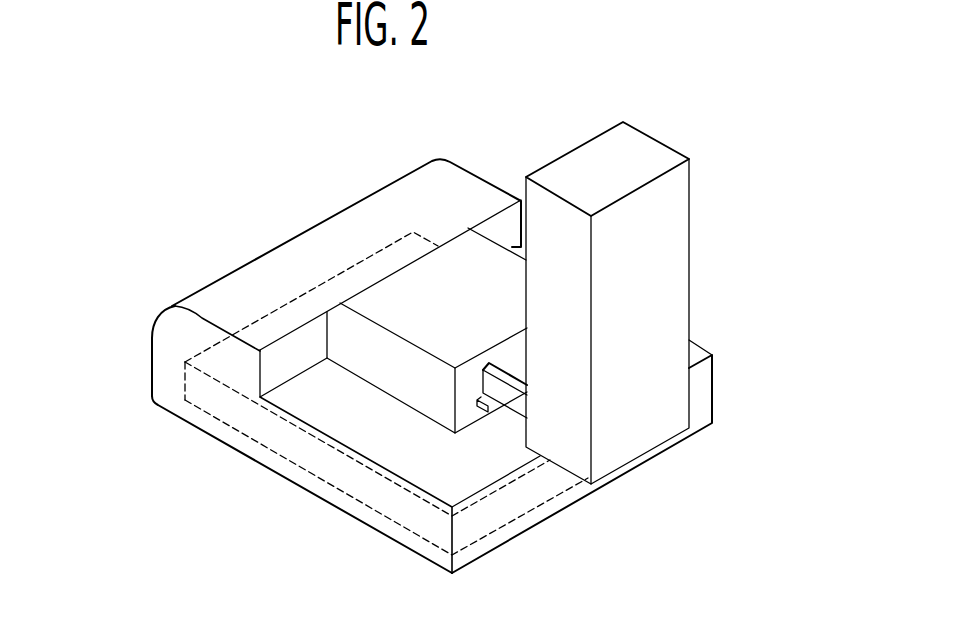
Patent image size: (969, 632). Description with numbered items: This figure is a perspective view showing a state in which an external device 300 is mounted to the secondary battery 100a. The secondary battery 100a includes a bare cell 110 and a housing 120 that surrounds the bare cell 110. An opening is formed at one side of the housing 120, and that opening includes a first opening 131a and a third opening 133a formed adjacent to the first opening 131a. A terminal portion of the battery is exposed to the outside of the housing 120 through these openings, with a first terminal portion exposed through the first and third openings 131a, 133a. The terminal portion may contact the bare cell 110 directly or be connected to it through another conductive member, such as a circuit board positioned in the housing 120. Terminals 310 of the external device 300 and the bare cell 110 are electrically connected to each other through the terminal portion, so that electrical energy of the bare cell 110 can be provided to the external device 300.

The secondary battery 100a is at (397, 366).
The bare cell 110 is at (342, 488).
The housing 120 is at (160, 418).
The first opening 131a is at (480, 368).
The third opening 133a is at (478, 405).
The external device 300 is at (708, 260).
The terminals 310 is at (515, 397).